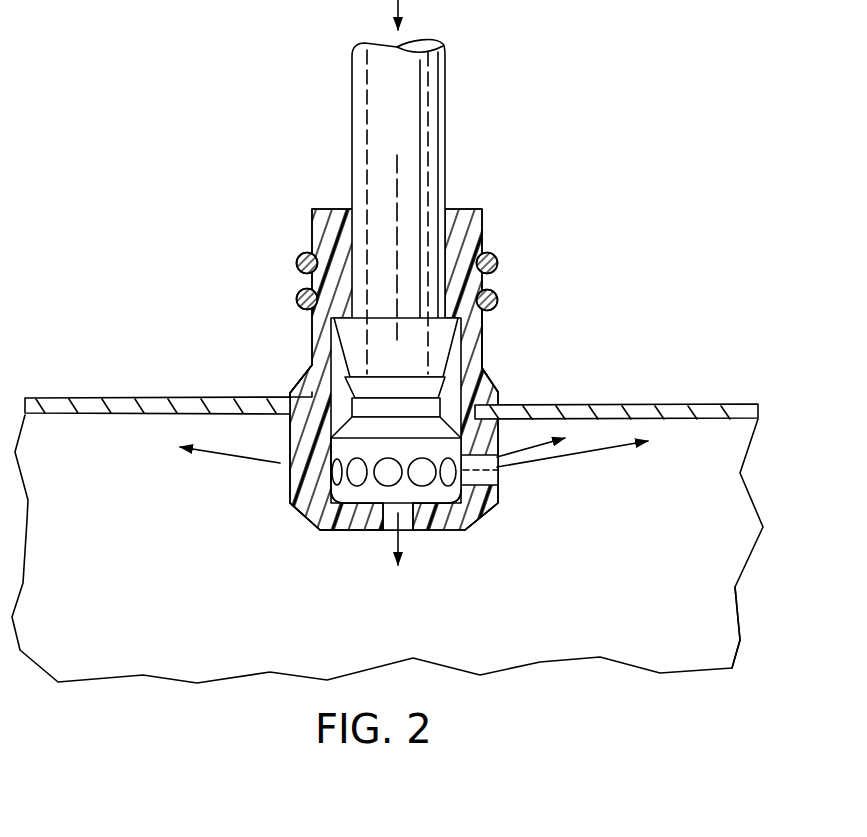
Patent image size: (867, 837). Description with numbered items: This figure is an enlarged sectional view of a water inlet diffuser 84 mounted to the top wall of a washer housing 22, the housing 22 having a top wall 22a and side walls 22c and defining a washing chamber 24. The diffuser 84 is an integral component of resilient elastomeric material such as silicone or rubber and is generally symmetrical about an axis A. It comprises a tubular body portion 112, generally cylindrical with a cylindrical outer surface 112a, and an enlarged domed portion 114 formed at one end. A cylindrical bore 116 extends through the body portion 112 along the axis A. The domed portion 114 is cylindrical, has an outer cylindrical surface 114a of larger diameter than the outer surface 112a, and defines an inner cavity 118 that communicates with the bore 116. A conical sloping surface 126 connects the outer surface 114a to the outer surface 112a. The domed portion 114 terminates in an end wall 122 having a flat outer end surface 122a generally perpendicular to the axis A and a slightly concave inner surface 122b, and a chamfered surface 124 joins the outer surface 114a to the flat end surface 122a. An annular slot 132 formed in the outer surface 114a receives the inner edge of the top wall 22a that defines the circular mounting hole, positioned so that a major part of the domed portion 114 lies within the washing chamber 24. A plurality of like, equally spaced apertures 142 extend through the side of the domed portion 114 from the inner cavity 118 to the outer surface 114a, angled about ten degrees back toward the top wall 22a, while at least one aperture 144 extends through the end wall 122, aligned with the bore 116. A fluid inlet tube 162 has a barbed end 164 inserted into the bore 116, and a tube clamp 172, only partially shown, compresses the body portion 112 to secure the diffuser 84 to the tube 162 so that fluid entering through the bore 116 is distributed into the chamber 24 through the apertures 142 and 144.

The tubular body portion 112 is at (481, 228).
The cylindrical outer surface 112a is at (482, 329).
The cylindrical bore 116 is at (443, 233).
The fluid inlet tube 162 is at (446, 104).
The barbed end 164 is at (347, 333).
The tube clamp 172 is at (298, 295).
The axis A is at (397, 165).
The housing 22 is at (60, 396).
The top wall 22a is at (680, 408).
The side walls 22c is at (723, 608).
The washing chamber 24 is at (247, 653).
The conical sloping surface 126 is at (300, 385).
The annular slot 132 is at (290, 400).
The domed portion 114 is at (500, 509).
The outer cylindrical surface 114a is at (283, 473).
The apertures 142 is at (385, 476).
The aperture 144 is at (405, 524).
The end wall 122 is at (358, 525).
The flat outer end surface 122a is at (425, 500).
The inner surface 122b is at (331, 503).
The chamfered surface 124 is at (357, 498).
The inner cavity 118 is at (418, 494).
The diffuser 84 is at (500, 541).